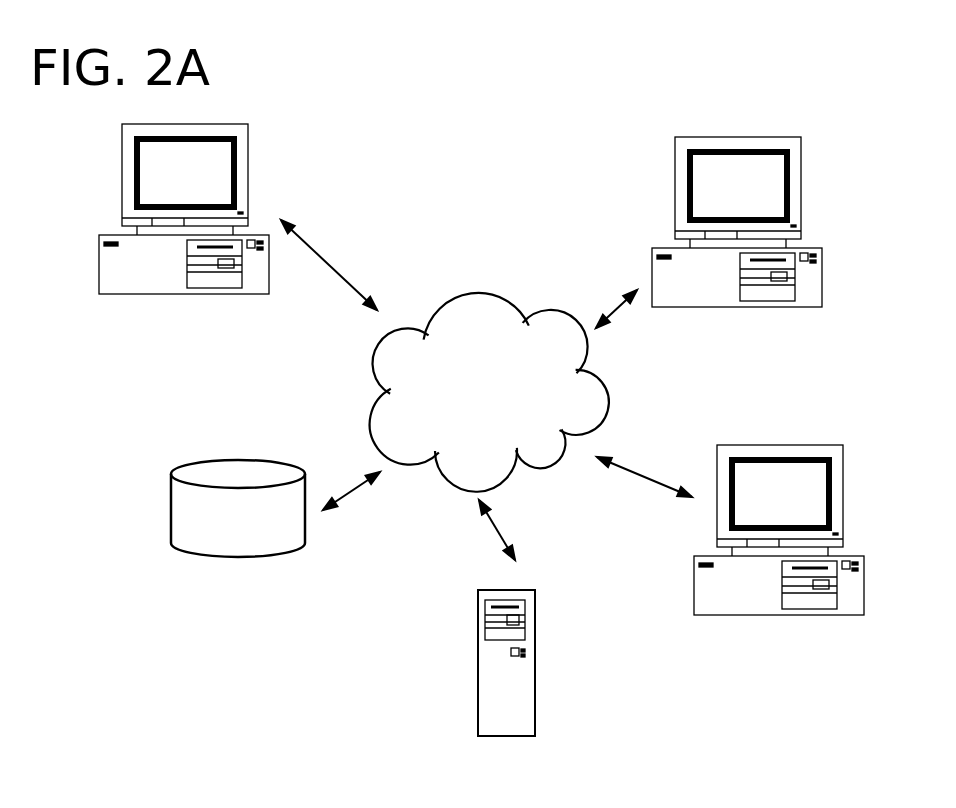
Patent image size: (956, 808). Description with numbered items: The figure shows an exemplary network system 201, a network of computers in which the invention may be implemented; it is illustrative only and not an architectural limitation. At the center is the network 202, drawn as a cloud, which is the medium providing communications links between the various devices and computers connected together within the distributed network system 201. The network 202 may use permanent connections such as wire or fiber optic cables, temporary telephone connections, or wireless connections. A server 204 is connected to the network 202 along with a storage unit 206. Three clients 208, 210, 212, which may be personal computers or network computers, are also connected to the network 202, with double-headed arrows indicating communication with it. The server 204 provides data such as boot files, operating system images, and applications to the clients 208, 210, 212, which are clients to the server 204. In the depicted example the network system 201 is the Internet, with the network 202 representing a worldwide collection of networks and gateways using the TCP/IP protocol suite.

The network system 201 is at (90, 145).
The network 202 is at (489, 392).
The server 204 is at (479, 612).
The storage unit 206 is at (182, 487).
The client 208 is at (251, 218).
The client 210 is at (665, 243).
The client 212 is at (749, 622).